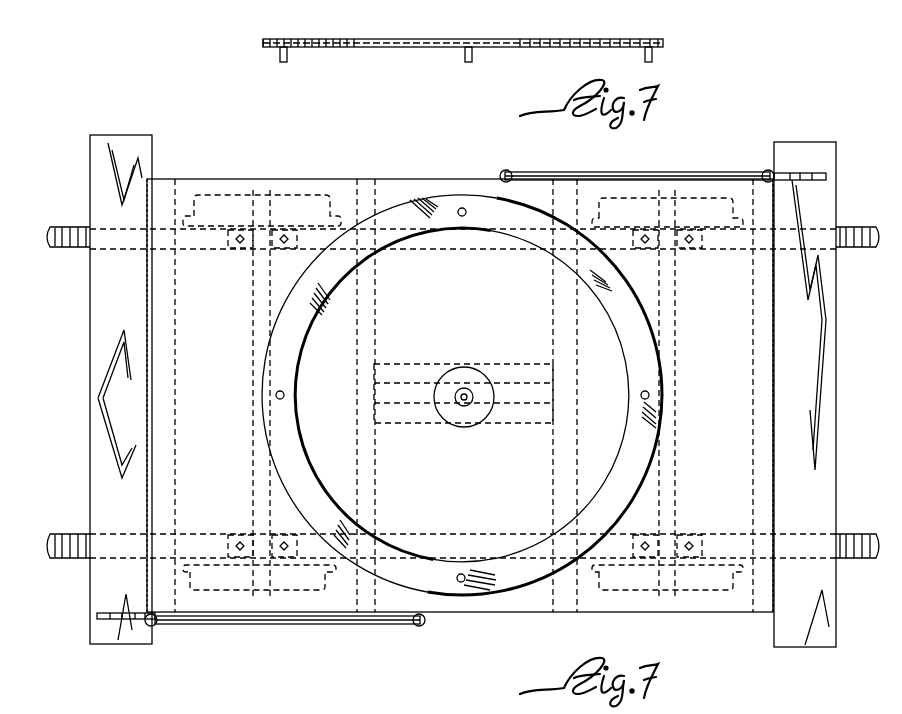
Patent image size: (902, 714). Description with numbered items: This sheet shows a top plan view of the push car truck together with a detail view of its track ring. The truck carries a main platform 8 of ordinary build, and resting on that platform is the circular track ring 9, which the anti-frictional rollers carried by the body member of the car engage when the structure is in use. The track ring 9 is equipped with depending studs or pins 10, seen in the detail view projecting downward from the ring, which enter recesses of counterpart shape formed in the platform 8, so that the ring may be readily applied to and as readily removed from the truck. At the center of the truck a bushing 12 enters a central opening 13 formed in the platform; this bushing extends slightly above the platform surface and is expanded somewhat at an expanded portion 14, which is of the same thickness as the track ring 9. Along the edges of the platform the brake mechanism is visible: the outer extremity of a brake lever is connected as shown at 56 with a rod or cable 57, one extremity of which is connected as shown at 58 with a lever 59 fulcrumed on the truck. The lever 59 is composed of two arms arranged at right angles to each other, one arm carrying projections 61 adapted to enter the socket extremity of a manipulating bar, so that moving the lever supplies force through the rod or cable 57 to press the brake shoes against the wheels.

In FIG. 7, the main platform 8 is at (338, 178).
In FIG. 8, the track ring 9 is at (418, 47).
In FIG. 7, the track ring 9 is at (621, 326).
In FIG. 8, the depending studs or pins 10 is at (287, 56).
In FIG. 7, the depending studs or pins 10 is at (466, 212).
In FIG. 7, the bushing 12 is at (464, 388).
In FIG. 7, the central opening 13 is at (455, 397).
In FIG. 7, the expanded portion 14 is at (489, 380).
In FIG. 7, the connection 56 is at (503, 171).
In FIG. 7, the rod or cable 57 is at (680, 172).
In FIG. 7, the connection 58 is at (766, 170).
In FIG. 7, the lever 59 is at (786, 176).
In FIG. 7, the projections 61 is at (804, 174).